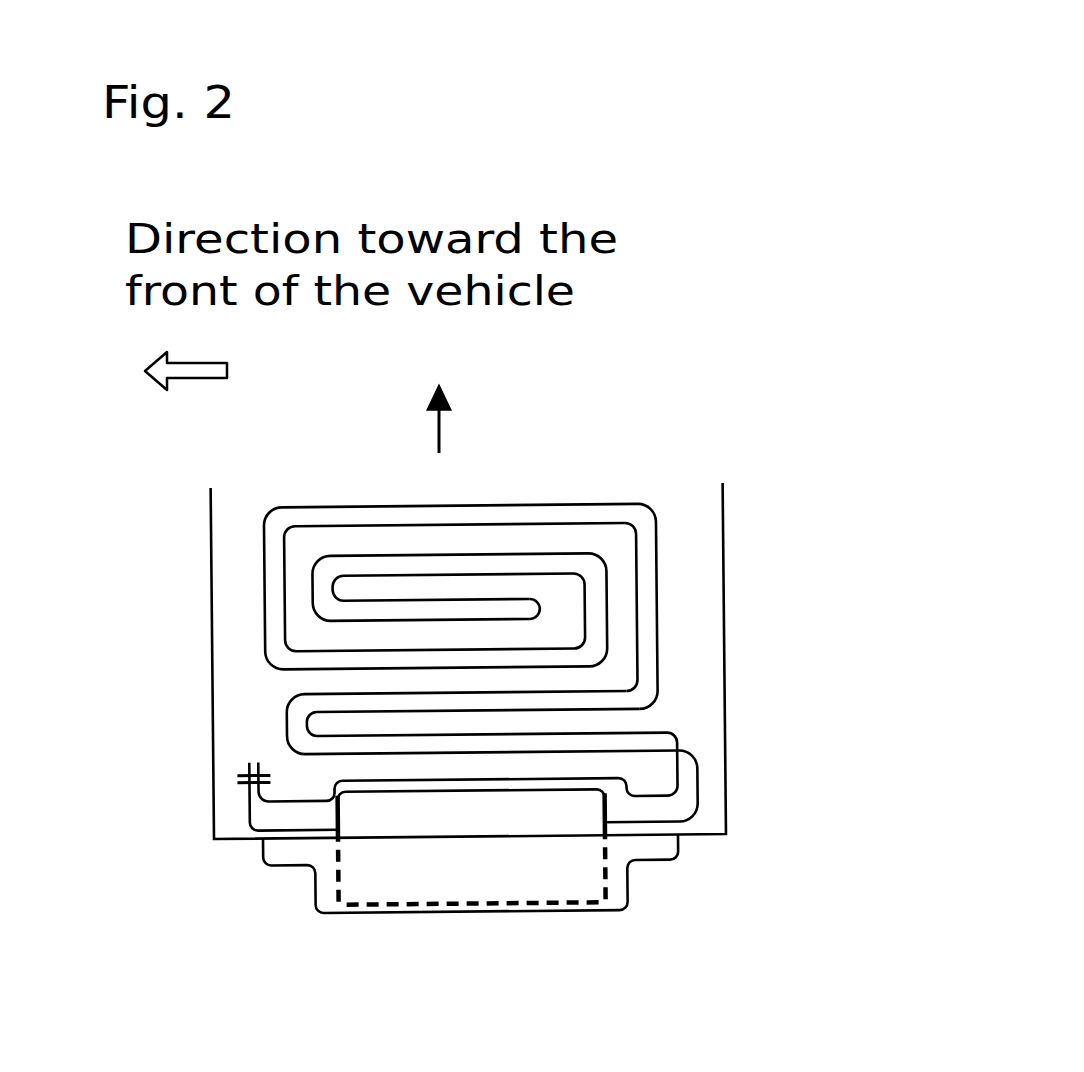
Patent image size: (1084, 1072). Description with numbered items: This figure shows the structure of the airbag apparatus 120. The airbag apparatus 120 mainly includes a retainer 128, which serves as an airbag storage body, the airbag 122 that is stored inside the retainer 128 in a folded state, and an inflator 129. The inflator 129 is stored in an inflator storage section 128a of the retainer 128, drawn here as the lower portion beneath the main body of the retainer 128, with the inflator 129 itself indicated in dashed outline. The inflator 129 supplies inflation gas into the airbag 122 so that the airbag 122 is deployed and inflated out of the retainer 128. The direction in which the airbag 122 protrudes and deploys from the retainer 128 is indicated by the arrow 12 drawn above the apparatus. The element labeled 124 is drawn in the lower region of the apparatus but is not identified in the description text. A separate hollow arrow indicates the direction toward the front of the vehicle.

The arrow 12 is at (470, 419).
The airbag apparatus 120 is at (752, 397).
The airbag 122 is at (668, 597).
The lower tube portion 124 is at (677, 790).
The retainer 128 is at (727, 693).
The inflator storage section 128a is at (632, 885).
The inflator 129 is at (330, 883).